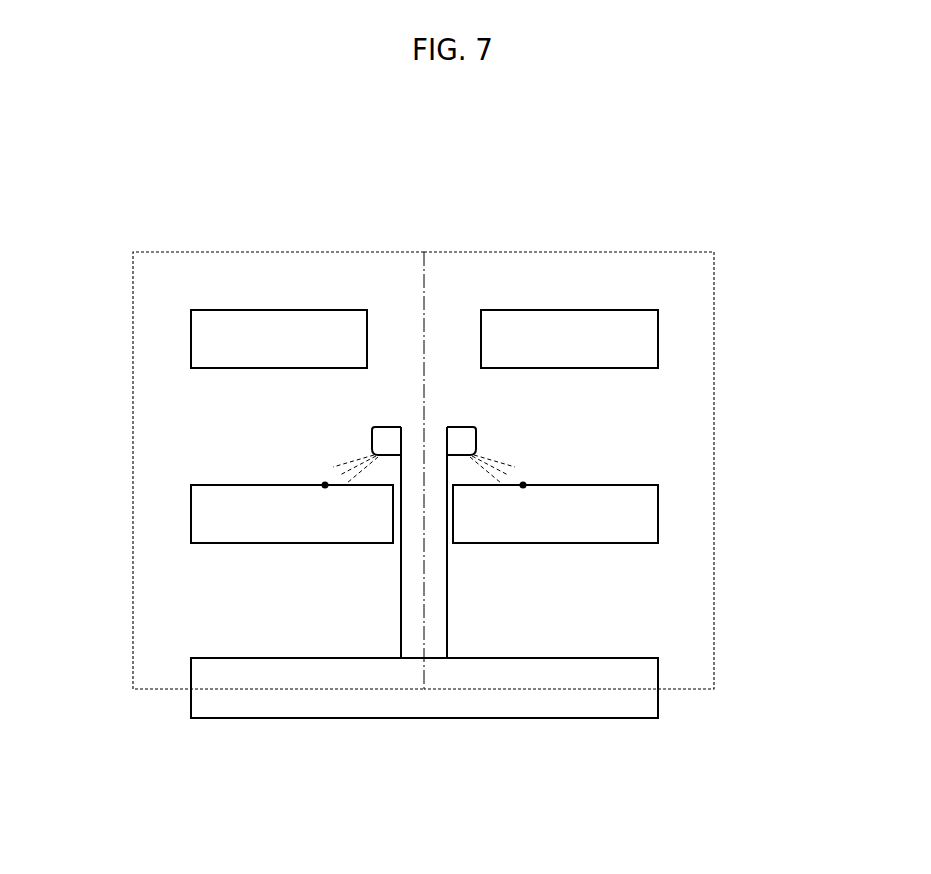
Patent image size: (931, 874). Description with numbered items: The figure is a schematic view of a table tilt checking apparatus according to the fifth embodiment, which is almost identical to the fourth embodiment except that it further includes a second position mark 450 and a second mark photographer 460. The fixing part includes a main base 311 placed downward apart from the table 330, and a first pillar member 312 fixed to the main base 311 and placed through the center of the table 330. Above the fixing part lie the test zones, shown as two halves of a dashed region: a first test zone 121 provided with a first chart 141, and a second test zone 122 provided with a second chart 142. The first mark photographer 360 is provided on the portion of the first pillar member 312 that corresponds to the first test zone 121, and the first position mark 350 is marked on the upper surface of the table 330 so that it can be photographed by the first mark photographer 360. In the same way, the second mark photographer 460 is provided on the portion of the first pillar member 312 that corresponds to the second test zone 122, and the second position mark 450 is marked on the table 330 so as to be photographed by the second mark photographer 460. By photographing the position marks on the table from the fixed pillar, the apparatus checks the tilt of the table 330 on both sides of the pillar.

The second test zone 122 is at (156, 252).
The first test zone 121 is at (623, 252).
The second chart 142 is at (191, 338).
The first chart 141 is at (658, 338).
The second mark photographer 460 is at (372, 427).
The first mark photographer 360 is at (476, 427).
The second position mark 450 is at (325, 485).
The first position mark 350 is at (523, 485).
The table 330 is at (658, 508).
The first pillar member 312 is at (447, 598).
The main base 311 is at (582, 718).